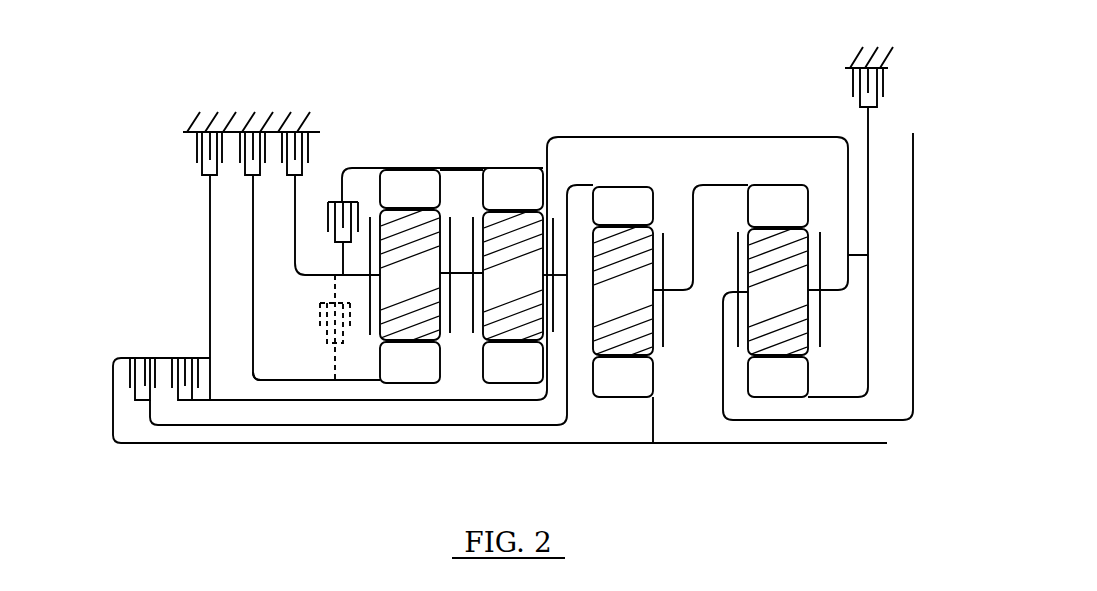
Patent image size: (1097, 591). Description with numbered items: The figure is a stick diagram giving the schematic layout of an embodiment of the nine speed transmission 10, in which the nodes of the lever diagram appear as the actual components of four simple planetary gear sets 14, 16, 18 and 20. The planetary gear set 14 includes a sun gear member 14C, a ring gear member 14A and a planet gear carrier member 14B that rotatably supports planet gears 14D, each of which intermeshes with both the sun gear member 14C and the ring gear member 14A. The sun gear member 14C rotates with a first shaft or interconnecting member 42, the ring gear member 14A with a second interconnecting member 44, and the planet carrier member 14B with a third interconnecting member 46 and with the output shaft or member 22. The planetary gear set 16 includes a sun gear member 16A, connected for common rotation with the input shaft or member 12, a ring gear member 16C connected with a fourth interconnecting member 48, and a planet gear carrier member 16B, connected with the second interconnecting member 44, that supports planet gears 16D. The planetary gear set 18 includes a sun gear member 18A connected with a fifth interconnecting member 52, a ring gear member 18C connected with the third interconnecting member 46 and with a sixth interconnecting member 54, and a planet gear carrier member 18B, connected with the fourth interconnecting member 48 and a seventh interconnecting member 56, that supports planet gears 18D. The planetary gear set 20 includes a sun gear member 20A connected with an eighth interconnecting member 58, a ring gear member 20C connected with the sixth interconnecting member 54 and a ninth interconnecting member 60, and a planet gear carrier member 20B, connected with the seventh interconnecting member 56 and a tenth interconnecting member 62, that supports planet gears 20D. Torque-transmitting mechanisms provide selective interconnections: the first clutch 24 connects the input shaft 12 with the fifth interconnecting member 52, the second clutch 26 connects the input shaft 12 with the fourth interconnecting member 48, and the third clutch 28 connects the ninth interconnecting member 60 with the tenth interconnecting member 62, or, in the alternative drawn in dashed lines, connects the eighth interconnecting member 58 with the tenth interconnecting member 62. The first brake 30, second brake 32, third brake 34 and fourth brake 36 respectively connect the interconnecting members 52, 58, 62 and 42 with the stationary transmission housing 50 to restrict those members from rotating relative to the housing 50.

The nine speed transmission 10 is at (738, 48).
The input shaft or member 12 is at (523, 444).
The planetary gear set 14 is at (766, 173).
The ring gear member 14A is at (762, 217).
The planet gear carrier member 14B is at (736, 279).
The sun gear member 14C is at (762, 389).
The planet gears 14D is at (762, 301).
The planetary gear set 16 is at (625, 173).
The sun gear member 16A is at (607, 389).
The planet gear carrier member 16B is at (665, 341).
The ring gear member 16C is at (607, 217).
The planet gears 16D is at (607, 301).
The planetary gear set 18 is at (528, 158).
The sun gear member 18A is at (497, 374).
The planet gear carrier member 18B is at (471, 318).
The ring gear member 18C is at (497, 200).
The planet gears 18D is at (497, 284).
The planetary gear set 20 is at (392, 158).
The sun gear member 20A is at (394, 374).
The planet gear carrier member 20B is at (455, 217).
The ring gear member 20C is at (394, 200).
The planet gears 20D is at (394, 284).
The output shaft or member 22 is at (912, 188).
The first clutch 24 is at (173, 382).
The second clutch 26 is at (131, 379).
The third clutch 28 is at (328, 223).
The first brake 30 is at (196, 156).
The second brake 32 is at (248, 177).
The third brake 34 is at (284, 172).
The fourth brake 36 is at (853, 90).
The first shaft or interconnecting member 42 is at (868, 244).
The second shaft or interconnecting member 44 is at (720, 185).
The third shaft or interconnecting member 46 is at (600, 136).
The fourth shaft or interconnecting member 48 is at (568, 402).
The transmission housing 50 is at (316, 113).
The fifth shaft or interconnecting member 52 is at (327, 401).
The sixth shaft or interconnecting member 54 is at (445, 167).
The seventh shaft or interconnecting member 56 is at (467, 272).
The eighth shaft or interconnecting member 58 is at (283, 382).
The ninth shaft or interconnecting member 60 is at (362, 167).
The tenth shaft or interconnecting member 62 is at (294, 258).